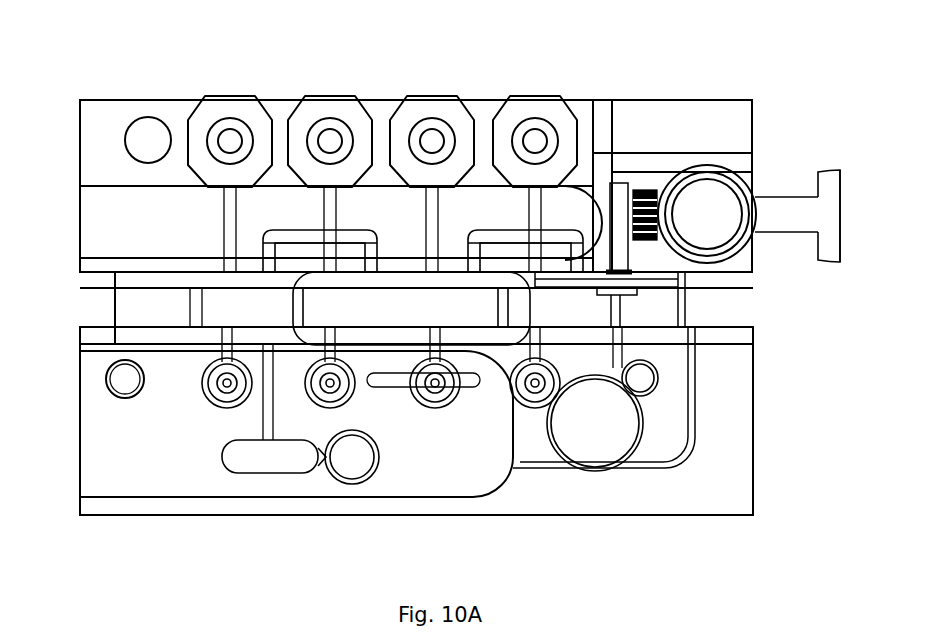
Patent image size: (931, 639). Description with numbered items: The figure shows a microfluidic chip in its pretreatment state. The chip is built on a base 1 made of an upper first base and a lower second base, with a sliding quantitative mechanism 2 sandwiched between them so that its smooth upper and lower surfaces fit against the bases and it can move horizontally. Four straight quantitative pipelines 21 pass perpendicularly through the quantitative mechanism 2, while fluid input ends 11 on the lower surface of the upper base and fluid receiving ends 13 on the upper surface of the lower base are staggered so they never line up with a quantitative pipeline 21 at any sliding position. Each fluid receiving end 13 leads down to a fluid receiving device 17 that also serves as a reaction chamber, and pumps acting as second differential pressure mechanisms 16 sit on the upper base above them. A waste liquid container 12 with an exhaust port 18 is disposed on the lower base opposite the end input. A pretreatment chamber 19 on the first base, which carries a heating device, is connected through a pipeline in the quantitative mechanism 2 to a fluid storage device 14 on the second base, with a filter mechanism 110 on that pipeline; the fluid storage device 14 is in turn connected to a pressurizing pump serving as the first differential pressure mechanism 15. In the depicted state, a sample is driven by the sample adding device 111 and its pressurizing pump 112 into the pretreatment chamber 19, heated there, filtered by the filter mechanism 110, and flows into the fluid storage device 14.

The base 1 is at (103, 135).
The quantitative mechanism 2 is at (232, 298).
The fluid input end 11 is at (578, 338).
The waste liquid container 12 is at (273, 452).
The fluid receiving end 13 is at (233, 345).
The fluid storage device 14 is at (595, 412).
The first differential pressure mechanism 15 is at (643, 373).
The second differential pressure mechanism 16 is at (228, 140).
The fluid receiving device 17 is at (535, 385).
The exhaust port 18 is at (353, 460).
The pretreatment chamber 19 is at (617, 195).
The quantitative pipeline 21 is at (402, 327).
The filter mechanism 110 is at (662, 283).
The sample adding device 111 is at (715, 195).
The pressurizing pump 112 is at (835, 210).